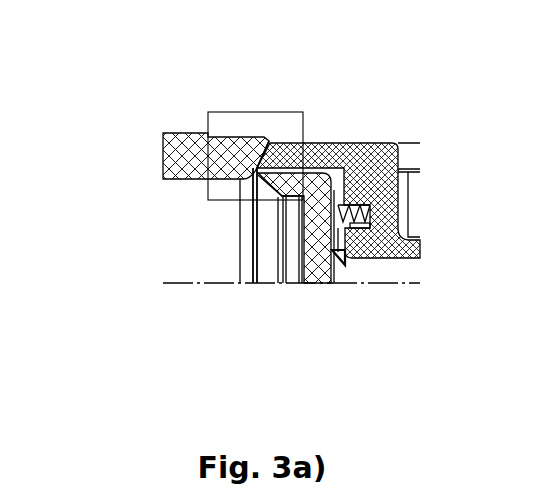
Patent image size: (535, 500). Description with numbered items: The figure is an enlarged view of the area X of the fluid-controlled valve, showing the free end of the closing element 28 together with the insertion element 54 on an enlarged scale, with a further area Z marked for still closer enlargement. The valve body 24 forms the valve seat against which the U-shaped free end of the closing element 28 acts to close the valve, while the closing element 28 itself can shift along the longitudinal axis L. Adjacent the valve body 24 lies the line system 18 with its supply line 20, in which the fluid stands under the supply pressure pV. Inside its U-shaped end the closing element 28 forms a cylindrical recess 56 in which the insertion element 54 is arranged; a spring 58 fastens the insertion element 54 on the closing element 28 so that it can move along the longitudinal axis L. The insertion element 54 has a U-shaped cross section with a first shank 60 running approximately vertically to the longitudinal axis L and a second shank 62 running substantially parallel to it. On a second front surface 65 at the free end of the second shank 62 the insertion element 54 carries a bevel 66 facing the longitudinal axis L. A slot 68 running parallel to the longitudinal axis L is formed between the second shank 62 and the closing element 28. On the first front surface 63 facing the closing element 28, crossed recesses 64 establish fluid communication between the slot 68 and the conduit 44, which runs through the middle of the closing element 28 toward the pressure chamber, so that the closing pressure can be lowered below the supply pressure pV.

The line system 18 is at (167, 225).
The supply line 20 is at (167, 225).
The valve body 24 is at (179, 132).
The closing element 28 is at (371, 143).
The conduit 44 is at (411, 285).
The insertion element 54 is at (310, 220).
The cylindrical recess 56 is at (345, 265).
The spring 58 is at (375, 214).
The first shank 60 is at (314, 287).
The second shank 62 is at (309, 142).
The first front surface 63 is at (466, 212).
The recesses 64 is at (410, 250).
The second front surface 65 is at (200, 203).
The bevel 66 is at (258, 189).
The slot 68 is at (270, 142).
The area Z is at (231, 112).
The longitudinal axis L is at (190, 285).
The area X is at (57, 357).
The supply pressure pV is at (203, 270).